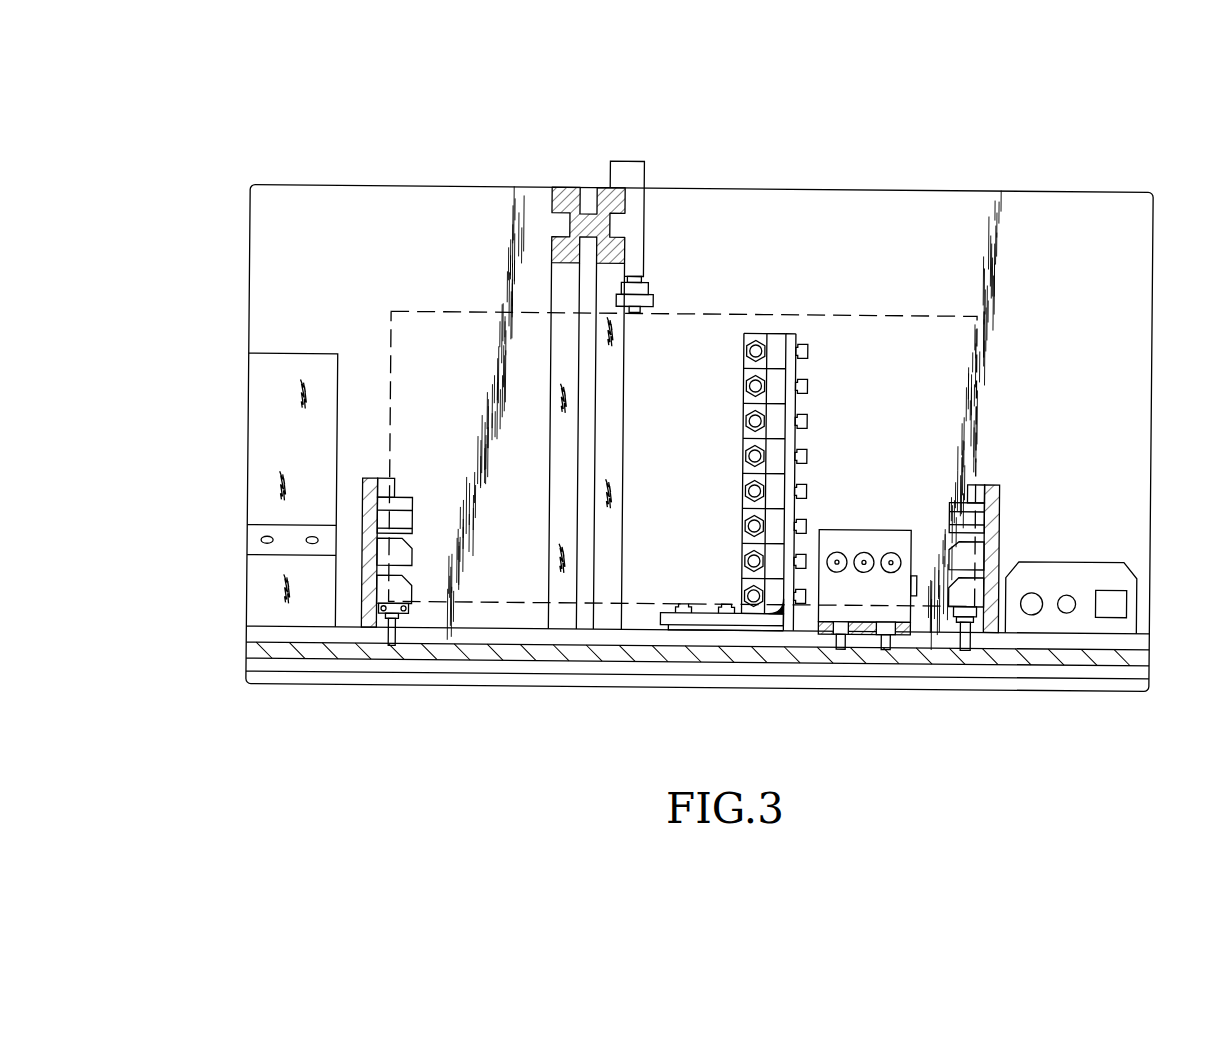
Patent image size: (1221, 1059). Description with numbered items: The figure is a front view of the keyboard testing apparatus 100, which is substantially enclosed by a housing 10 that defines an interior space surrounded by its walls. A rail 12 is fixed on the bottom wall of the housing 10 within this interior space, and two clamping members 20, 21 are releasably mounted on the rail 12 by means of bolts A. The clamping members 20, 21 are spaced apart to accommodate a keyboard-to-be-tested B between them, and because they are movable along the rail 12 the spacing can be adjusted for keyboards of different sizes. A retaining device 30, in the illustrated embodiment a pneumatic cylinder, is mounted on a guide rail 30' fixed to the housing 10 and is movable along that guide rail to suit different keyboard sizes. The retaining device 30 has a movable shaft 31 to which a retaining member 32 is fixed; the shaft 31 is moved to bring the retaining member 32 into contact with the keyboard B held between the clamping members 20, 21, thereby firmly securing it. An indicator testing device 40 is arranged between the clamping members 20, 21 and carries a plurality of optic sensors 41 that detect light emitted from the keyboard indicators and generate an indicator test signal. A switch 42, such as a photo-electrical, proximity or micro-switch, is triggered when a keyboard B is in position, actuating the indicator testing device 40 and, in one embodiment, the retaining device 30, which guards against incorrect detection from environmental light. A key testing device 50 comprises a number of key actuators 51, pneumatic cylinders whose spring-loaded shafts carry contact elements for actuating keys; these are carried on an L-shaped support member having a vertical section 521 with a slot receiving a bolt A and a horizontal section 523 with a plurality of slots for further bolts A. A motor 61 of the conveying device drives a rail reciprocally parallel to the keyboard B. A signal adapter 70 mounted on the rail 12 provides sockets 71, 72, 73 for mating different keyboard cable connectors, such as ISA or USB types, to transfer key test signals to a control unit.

The keyboard testing apparatus 100 is at (824, 145).
The housing 10 is at (1033, 189).
The rail 12 is at (1135, 668).
The clamping member 20 is at (363, 500).
The clamping member 21 is at (995, 534).
The retaining device 30 is at (626, 201).
The guide rail 30' is at (576, 377).
The movable shaft 31 is at (640, 283).
The retaining member 32 is at (652, 302).
The indicator testing device 40 is at (837, 583).
The optic sensor 41 is at (840, 557).
The switch 42 is at (908, 633).
The key testing device 50 is at (728, 556).
The key actuator 51 is at (744, 352).
The vertical section 521 is at (790, 350).
The horizontal section 523 is at (728, 620).
The motor 61 is at (285, 430).
The signal adapter 70 is at (1115, 574).
The socket 71 is at (1030, 613).
The socket 72 is at (1067, 611).
The socket 73 is at (1113, 614).
The bolt A is at (388, 645).
The keyboard-to-be-tested B is at (930, 312).